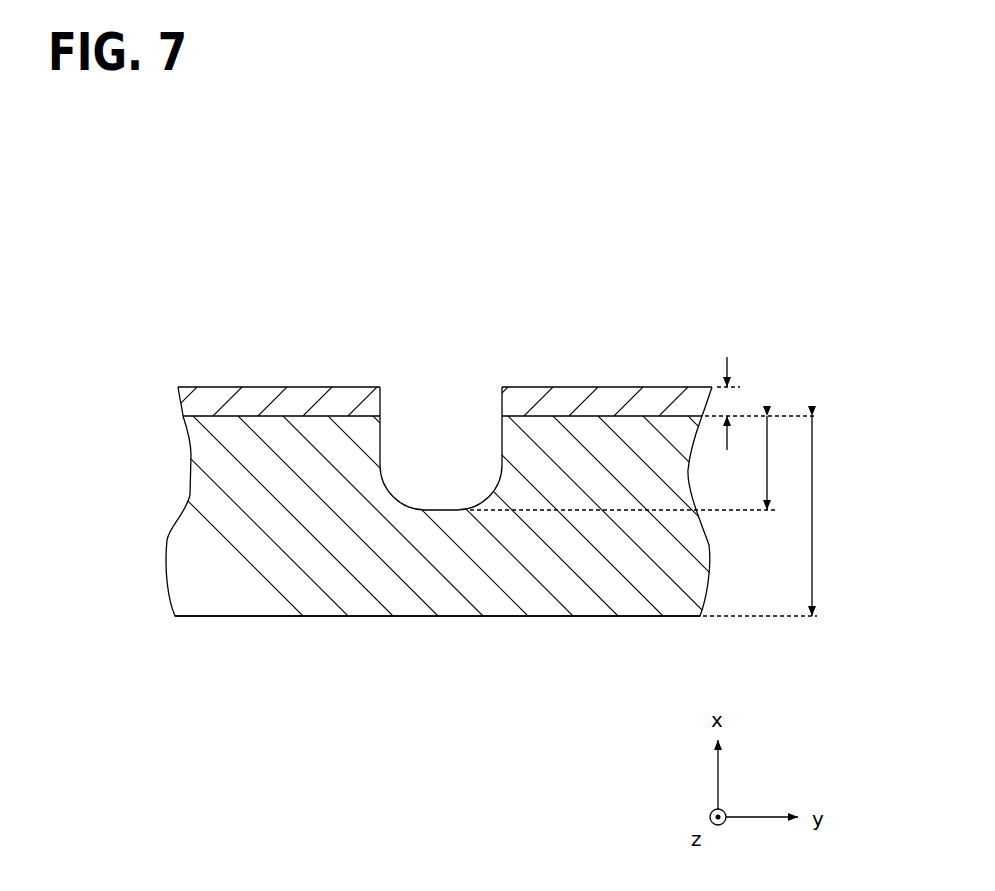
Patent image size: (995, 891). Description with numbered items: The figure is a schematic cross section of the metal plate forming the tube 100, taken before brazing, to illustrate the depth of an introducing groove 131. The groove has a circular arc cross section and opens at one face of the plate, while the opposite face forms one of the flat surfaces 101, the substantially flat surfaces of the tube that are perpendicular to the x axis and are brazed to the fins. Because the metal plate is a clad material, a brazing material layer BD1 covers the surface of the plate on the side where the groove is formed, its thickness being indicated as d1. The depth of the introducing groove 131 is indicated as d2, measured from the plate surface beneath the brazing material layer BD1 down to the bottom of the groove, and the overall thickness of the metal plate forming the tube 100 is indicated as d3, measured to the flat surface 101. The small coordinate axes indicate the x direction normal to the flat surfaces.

The tube 100 is at (445, 603).
The flat surfaces 101 is at (267, 616).
The introducing groove 131 is at (450, 418).
The brazing material layer BD1 is at (285, 400).
The thickness of the brazing material layer d1 is at (728, 403).
The depth of the introducing groove d2 is at (642, 463).
The thickness of the metal plate d3 is at (774, 516).